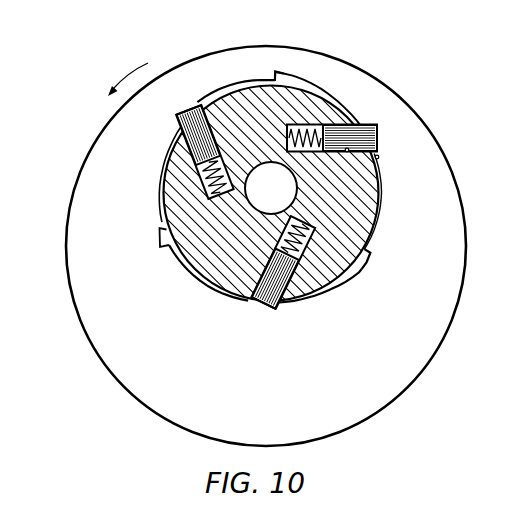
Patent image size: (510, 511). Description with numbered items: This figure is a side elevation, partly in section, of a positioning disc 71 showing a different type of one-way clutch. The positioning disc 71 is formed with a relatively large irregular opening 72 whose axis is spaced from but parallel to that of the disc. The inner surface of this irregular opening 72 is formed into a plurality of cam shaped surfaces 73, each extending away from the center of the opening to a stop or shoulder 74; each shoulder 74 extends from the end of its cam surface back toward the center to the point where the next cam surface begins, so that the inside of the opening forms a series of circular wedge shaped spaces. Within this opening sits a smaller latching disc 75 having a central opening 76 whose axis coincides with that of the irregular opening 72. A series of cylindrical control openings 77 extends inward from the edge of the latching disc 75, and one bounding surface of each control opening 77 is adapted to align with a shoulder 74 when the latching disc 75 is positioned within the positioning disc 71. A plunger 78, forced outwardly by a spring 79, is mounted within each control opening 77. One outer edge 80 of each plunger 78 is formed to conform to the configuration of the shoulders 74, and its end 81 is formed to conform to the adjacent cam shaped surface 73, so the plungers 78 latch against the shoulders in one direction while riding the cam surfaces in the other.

The positioning disc 71 is at (463, 231).
The irregular opening 72 is at (288, 80).
The cam shaped surfaces 73 is at (381, 160).
The shoulder 74 is at (274, 81).
The latching disc 75 is at (305, 97).
The central opening 76 is at (262, 208).
The cylindrical control openings 77 is at (318, 291).
The plunger 78 is at (281, 300).
The spring 79 is at (351, 264).
The outer edge 80 is at (275, 303).
The end 81 is at (263, 306).